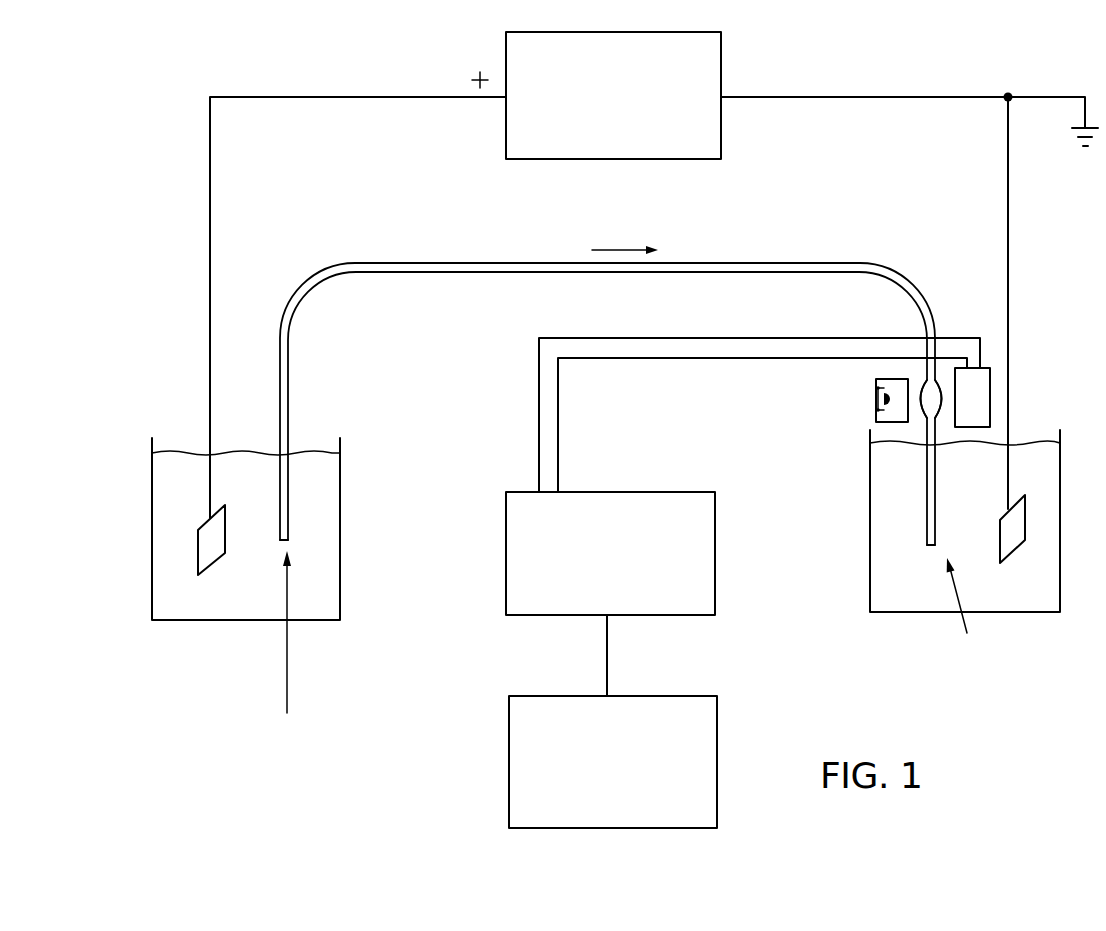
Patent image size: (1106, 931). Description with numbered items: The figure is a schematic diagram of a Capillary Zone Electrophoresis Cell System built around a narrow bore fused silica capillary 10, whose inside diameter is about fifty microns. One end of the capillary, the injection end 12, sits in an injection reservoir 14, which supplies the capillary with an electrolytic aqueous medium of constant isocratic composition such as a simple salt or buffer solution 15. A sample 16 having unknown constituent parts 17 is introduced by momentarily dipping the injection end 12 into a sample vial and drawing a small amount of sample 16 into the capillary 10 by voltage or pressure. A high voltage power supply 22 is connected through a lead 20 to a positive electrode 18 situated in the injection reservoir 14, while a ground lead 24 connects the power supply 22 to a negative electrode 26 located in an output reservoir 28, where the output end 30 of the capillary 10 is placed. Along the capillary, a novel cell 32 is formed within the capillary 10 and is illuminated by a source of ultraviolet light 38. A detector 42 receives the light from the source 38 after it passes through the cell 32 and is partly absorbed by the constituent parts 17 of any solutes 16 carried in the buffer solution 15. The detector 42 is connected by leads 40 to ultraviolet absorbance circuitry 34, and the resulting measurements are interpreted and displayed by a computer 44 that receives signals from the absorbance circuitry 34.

The capillary 10 is at (611, 387).
The injection end 12 is at (301, 667).
The injection reservoir 14 is at (340, 510).
The buffer solution 15 is at (316, 592).
The sample 16 is at (716, 292).
The constituent parts 17 is at (611, 387).
The positive electrode 18 is at (211, 556).
The positive lead wire 20 is at (210, 232).
The high voltage power supply 22 is at (613, 31).
The ground lead 24 is at (853, 94).
The negative electrode 26 is at (1022, 540).
The output reservoir 28 is at (870, 525).
The output end 30 is at (1001, 637).
The cell 32 is at (943, 414).
The ultraviolet absorbance circuitry 34 is at (716, 521).
The source of ultraviolet light 38 is at (877, 380).
The leads 40 is at (783, 339).
The detector 42 is at (991, 395).
The computer 44 is at (662, 694).